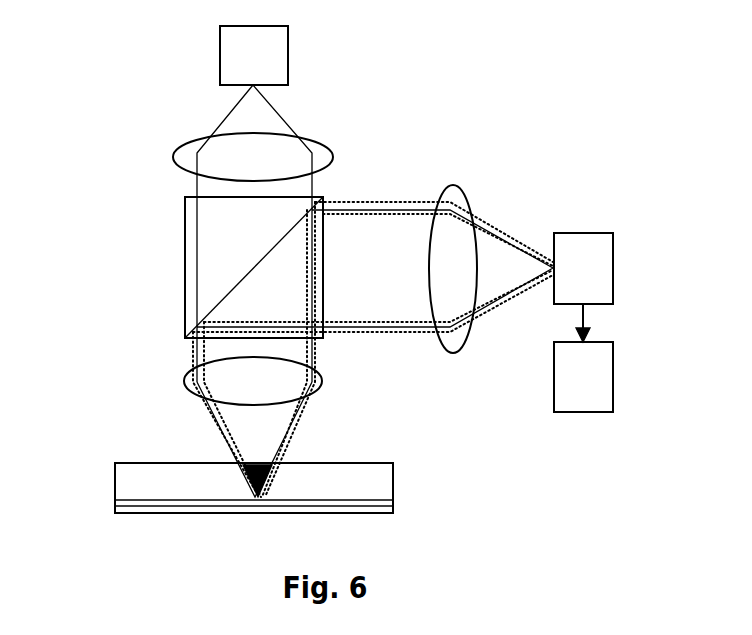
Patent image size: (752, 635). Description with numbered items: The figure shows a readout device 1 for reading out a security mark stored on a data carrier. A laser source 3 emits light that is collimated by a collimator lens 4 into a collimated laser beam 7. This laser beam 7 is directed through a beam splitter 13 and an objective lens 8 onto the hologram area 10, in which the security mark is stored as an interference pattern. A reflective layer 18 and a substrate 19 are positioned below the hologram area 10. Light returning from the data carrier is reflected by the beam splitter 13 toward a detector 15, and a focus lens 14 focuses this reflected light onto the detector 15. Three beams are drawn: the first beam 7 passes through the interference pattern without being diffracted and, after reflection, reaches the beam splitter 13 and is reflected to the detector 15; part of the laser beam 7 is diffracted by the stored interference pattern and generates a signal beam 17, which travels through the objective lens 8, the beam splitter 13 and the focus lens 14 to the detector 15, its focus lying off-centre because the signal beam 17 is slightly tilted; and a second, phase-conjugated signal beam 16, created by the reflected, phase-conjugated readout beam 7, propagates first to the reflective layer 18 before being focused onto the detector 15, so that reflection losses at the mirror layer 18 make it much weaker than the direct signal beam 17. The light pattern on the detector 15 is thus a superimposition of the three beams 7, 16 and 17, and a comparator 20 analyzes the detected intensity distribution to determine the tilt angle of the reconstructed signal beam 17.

The optical measuring apparatus 1 is at (102, 443).
The laser source 3 is at (290, 58).
The collimator lens 4 is at (328, 145).
The collimated laser beam 7 is at (197, 190).
The objective lens 8 is at (325, 380).
The hologram area 10 is at (115, 477).
The beam splitter 13 is at (182, 243).
The focus lens 14 is at (460, 187).
The detector 15 is at (583, 233).
The phase-conjugated signal beam 16 is at (210, 407).
The signal beam 17 is at (193, 347).
The reflective layer 18 is at (395, 500).
The substrate 19 is at (393, 508).
The comparator 20 is at (585, 413).